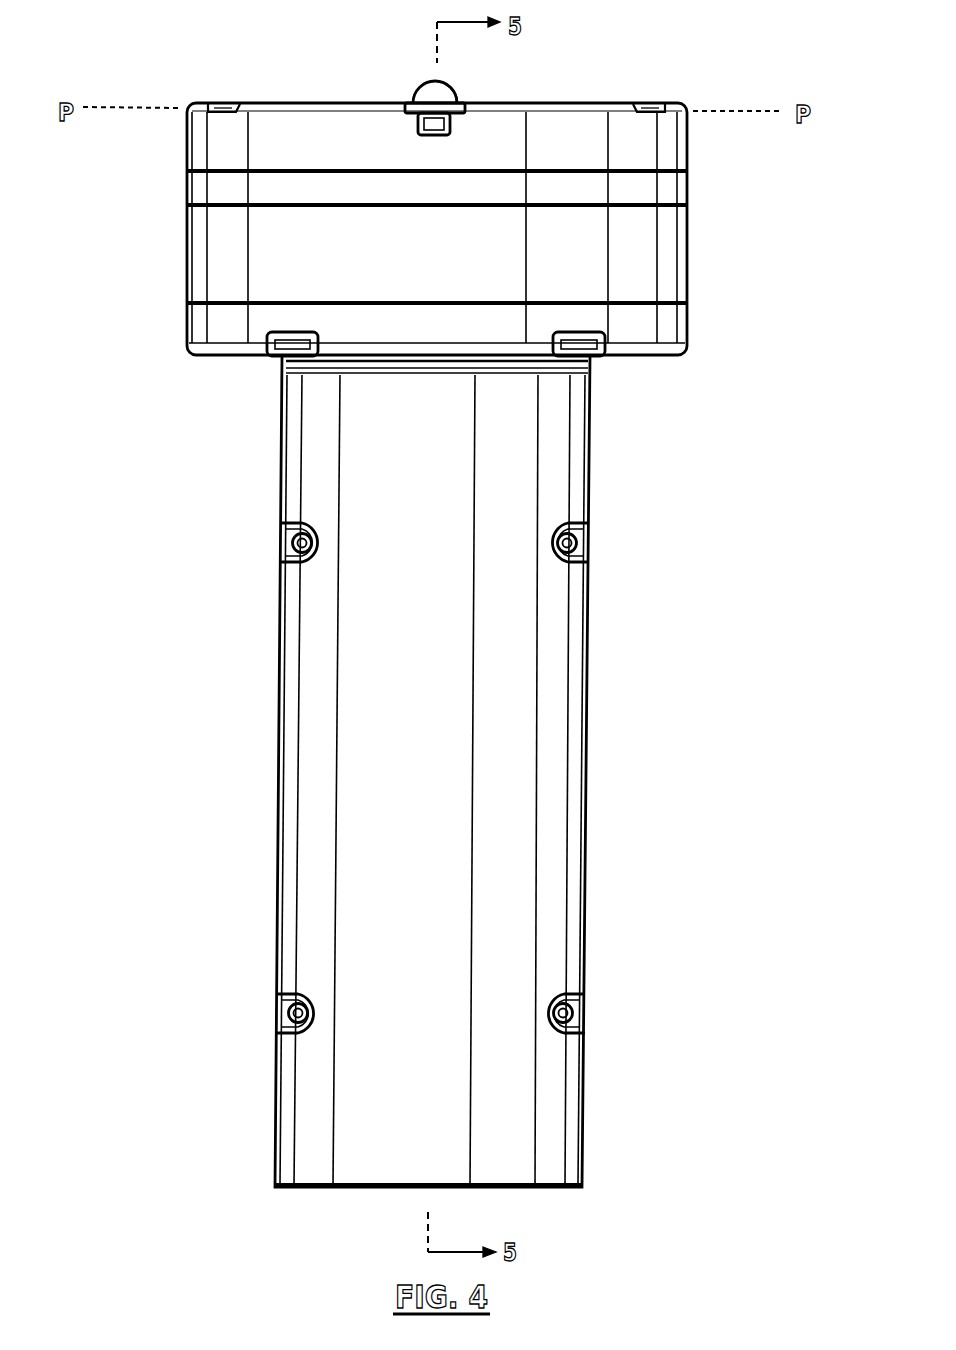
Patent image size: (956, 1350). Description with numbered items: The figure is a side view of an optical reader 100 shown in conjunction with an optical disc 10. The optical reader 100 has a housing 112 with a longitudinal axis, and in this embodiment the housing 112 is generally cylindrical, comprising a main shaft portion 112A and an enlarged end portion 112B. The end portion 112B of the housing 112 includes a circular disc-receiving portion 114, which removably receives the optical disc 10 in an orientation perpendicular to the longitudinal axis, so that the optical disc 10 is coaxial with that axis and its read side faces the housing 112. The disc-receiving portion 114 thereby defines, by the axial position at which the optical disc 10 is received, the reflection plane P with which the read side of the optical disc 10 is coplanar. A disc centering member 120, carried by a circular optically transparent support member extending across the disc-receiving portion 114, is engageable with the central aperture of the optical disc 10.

The optical reader 100 is at (155, 255).
The optical disc 10 is at (232, 101).
The disc centering member 120 is at (452, 88).
The disc-receiving portion 114 is at (676, 143).
The housing 112 is at (622, 449).
The enlarged end portion 112B is at (648, 258).
The main shaft portion 112A is at (550, 745).